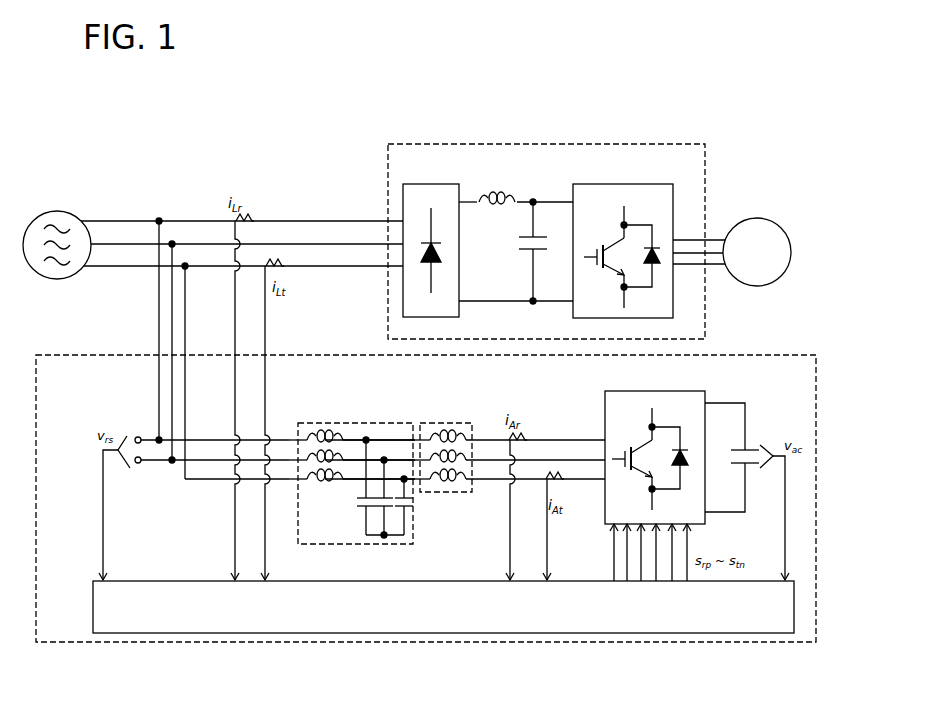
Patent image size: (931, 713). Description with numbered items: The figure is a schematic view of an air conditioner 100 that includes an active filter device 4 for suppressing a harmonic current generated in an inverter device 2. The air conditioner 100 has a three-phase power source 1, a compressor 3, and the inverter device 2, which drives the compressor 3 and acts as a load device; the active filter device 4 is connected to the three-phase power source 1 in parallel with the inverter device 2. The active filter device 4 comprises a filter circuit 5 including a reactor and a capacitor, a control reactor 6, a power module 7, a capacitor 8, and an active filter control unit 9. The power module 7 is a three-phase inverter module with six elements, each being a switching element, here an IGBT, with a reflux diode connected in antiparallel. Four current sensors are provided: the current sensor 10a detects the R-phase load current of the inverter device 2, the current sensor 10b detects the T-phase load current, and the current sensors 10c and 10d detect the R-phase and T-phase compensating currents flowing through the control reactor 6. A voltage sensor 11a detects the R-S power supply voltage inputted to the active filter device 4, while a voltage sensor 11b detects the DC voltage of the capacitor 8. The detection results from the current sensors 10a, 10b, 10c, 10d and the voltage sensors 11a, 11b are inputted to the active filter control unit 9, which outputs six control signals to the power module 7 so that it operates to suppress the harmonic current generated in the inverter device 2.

The three-phase power source 1 is at (51, 213).
The inverter device 2 is at (706, 150).
The compressor 3 is at (792, 252).
The active filter device 4 is at (817, 376).
The filter circuit 5 is at (325, 424).
The control reactor 6 is at (446, 424).
The power module 7 is at (605, 402).
The capacitor 8 is at (754, 468).
The active filter control unit 9 is at (93, 601).
The current sensor 10a is at (262, 219).
The current sensor 10b is at (290, 270).
The current sensor 10c is at (532, 442).
The current sensor 10d is at (560, 483).
The voltage sensor 11a is at (130, 466).
The voltage sensor 11b is at (765, 440).
The air conditioner 100 is at (442, 690).